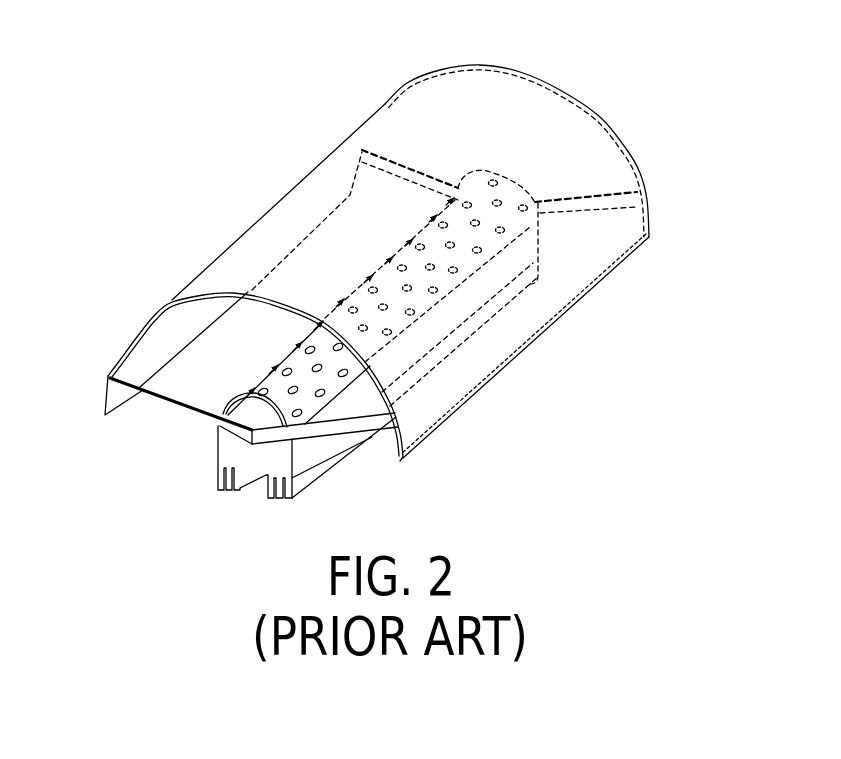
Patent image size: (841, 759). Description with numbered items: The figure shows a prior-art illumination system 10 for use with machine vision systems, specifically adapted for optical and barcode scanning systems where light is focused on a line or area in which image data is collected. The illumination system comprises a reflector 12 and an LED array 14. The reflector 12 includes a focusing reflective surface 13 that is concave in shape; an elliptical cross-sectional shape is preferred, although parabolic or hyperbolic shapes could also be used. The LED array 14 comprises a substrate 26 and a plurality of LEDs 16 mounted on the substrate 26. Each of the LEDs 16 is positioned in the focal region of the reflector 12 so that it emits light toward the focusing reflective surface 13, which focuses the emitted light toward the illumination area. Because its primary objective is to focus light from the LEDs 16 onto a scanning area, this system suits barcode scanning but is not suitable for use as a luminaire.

The prior art filter assembly 10 is at (278, 172).
The reflector 12 is at (456, 379).
The focusing reflective surface 13 is at (195, 310).
The LED array 14 is at (345, 283).
The LEDs 16 is at (255, 385).
The substrate 26 is at (299, 372).